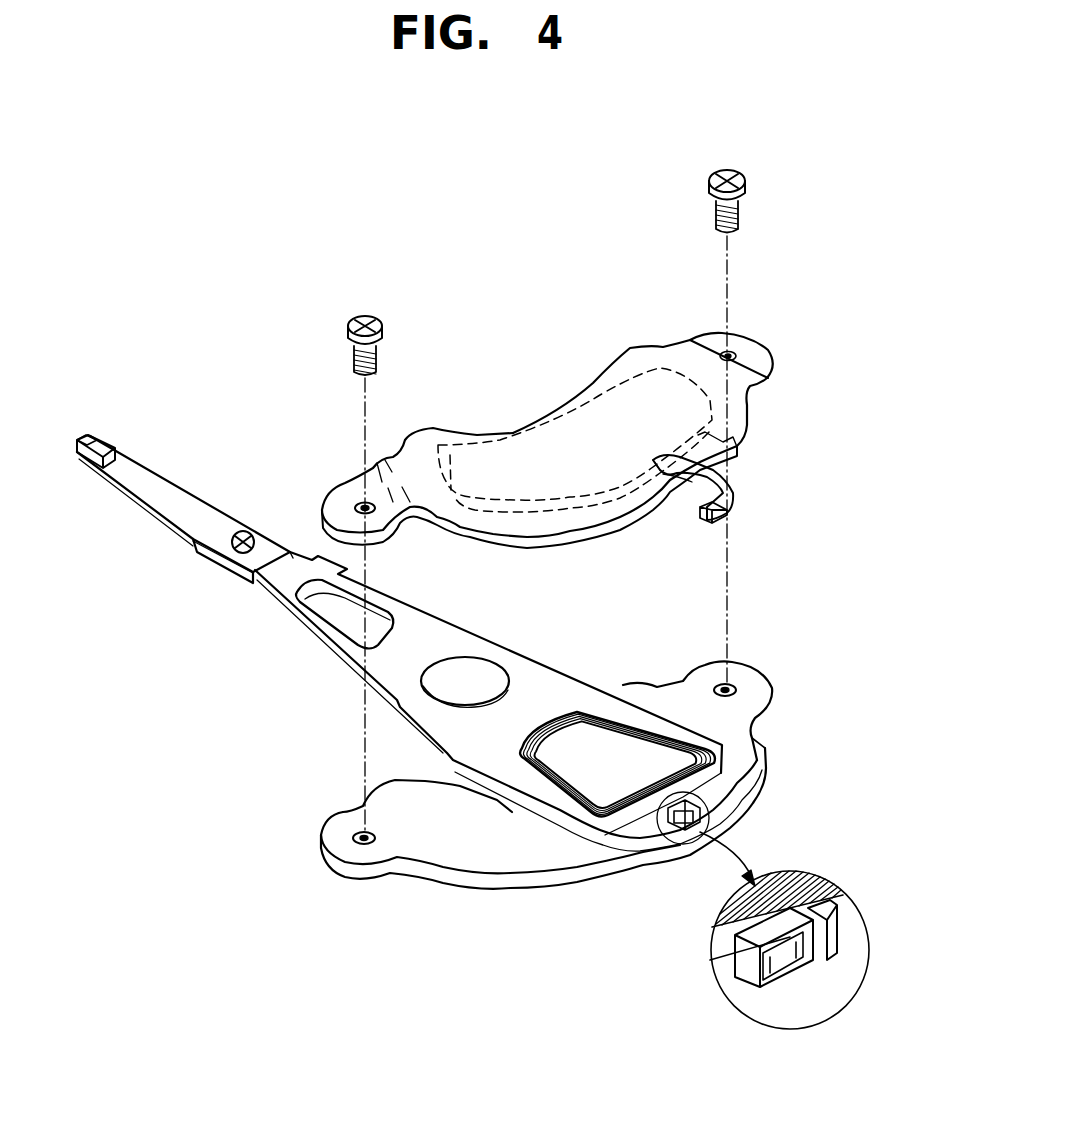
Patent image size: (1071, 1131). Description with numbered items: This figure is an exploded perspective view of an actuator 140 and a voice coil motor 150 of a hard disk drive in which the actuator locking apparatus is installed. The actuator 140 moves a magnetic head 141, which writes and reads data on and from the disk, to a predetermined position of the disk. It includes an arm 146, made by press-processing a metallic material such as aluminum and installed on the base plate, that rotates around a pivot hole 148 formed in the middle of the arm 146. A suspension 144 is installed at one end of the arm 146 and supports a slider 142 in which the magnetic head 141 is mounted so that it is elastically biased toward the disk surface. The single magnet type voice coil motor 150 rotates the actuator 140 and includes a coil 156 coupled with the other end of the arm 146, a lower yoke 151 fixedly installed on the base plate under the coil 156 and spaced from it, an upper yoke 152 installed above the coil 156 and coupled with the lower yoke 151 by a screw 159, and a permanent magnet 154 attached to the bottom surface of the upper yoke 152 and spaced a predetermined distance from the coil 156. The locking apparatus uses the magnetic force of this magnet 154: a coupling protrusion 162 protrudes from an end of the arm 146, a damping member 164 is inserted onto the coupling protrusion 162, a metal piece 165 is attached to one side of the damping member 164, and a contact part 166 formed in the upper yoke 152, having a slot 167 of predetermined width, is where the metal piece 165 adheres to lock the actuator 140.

The actuator 140 is at (316, 700).
The magnetic head 141 is at (86, 436).
The slider 142 is at (107, 448).
The suspension 144 is at (197, 510).
The arm 146 is at (417, 632).
The pivot hole 148 is at (474, 680).
The voice coil motor 150 is at (582, 416).
The lower yoke 151 is at (683, 692).
The upper yoke 152 is at (418, 455).
The magnet 154 is at (538, 437).
The coil 156 is at (583, 715).
The screw 159 is at (362, 302).
The coupling protrusion 162 is at (788, 975).
The damping member 164 is at (752, 985).
The metal piece 165 is at (838, 945).
The contact part 166 is at (720, 476).
The slot 167 is at (725, 518).